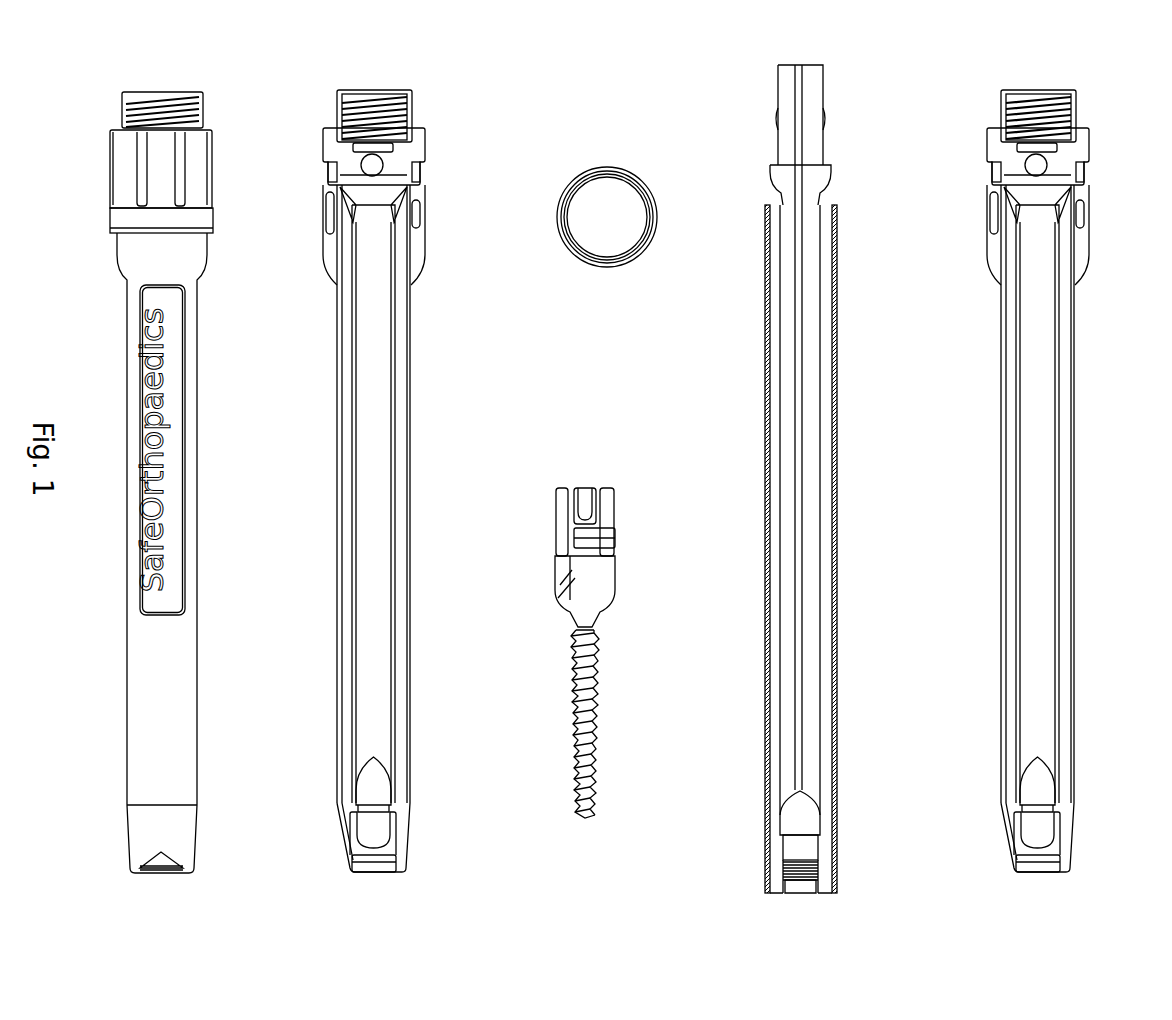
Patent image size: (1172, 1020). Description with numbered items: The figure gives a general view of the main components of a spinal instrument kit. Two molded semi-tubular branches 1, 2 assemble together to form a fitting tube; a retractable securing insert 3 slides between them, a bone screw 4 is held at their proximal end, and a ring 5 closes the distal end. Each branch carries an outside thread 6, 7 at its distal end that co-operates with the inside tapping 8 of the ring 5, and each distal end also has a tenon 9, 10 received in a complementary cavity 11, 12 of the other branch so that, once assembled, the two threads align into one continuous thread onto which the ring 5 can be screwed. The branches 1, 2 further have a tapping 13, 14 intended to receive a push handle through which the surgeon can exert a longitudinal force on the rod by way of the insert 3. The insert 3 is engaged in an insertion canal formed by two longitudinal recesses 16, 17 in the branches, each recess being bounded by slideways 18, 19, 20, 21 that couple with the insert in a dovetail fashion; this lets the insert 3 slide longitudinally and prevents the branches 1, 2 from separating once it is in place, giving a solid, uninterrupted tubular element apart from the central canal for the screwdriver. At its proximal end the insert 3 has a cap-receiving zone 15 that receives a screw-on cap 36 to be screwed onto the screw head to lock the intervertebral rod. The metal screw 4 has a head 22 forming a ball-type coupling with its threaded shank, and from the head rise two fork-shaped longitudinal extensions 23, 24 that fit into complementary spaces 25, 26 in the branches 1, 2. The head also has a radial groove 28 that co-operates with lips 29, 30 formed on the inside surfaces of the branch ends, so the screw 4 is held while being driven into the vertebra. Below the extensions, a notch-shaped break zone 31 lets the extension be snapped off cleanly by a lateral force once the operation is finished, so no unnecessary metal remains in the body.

The branch 1 is at (425, 742).
The branch 2 is at (1093, 688).
The retractable securing insert 3 is at (845, 762).
The screw 4 is at (567, 464).
The ring 5 is at (625, 165).
The outside thread 6 is at (335, 97).
The outside thread 7 is at (1078, 100).
The inside tapping 8 is at (595, 195).
The tenon 9 is at (425, 212).
The tenon 10 is at (1089, 212).
The cavity 11 is at (322, 212).
The cavity 12 is at (988, 213).
The tapping 13 is at (1000, 130).
The tapping 14 is at (335, 137).
The cap-receiving zone 15 is at (800, 883).
The longitudinal recess 16 is at (1040, 497).
The longitudinal recess 17 is at (378, 412).
The slideway 18 is at (1060, 377).
The slideway 19 is at (1005, 372).
The slideway 20 is at (395, 337).
The slideway 21 is at (340, 335).
The head 22 is at (618, 575).
The longitudinal extension 23 is at (550, 492).
The longitudinal extension 24 is at (618, 497).
The space 25 is at (394, 838).
The space 26 is at (1060, 840).
The radial groove 28 is at (612, 543).
The lip 29 is at (1040, 868).
The lip 30 is at (368, 865).
The break zone 31 is at (590, 560).
The screw-on cap 36 is at (818, 862).